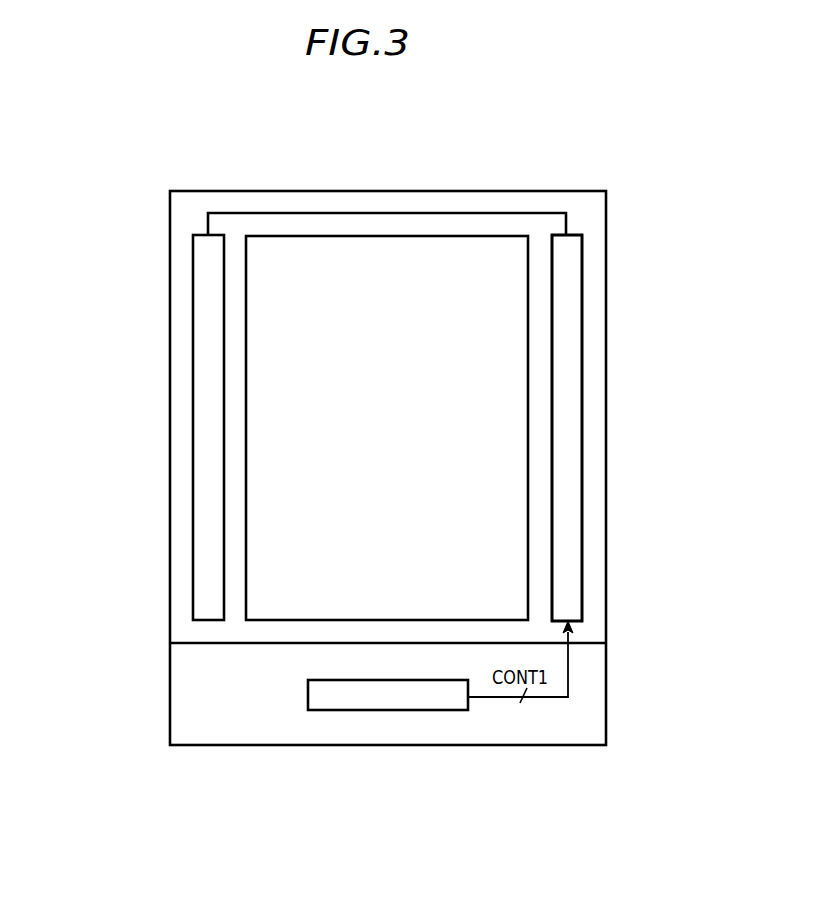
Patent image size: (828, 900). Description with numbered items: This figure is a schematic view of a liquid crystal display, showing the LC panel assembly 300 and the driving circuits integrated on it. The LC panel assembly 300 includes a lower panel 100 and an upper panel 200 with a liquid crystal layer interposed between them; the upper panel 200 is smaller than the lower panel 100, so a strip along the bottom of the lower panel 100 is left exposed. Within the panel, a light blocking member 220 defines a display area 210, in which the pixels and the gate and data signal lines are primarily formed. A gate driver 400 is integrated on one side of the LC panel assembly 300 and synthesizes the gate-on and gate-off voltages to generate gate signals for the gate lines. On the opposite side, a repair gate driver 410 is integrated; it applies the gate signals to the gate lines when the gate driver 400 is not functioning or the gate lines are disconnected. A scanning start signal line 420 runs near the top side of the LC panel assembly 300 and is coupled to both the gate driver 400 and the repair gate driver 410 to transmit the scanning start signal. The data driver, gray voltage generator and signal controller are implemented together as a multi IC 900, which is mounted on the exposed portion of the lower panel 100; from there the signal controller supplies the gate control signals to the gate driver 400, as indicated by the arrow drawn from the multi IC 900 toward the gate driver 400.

The lower panel 100 is at (192, 688).
The upper panel 200 is at (192, 643).
The LC panel assembly 300 is at (111, 637).
The display area 210 is at (512, 372).
The light blocking member 220 is at (594, 521).
The gate driver 400 is at (582, 450).
The repair gate driver 410 is at (194, 547).
The scanning start signal line 420 is at (488, 213).
The multi IC 900 is at (327, 702).